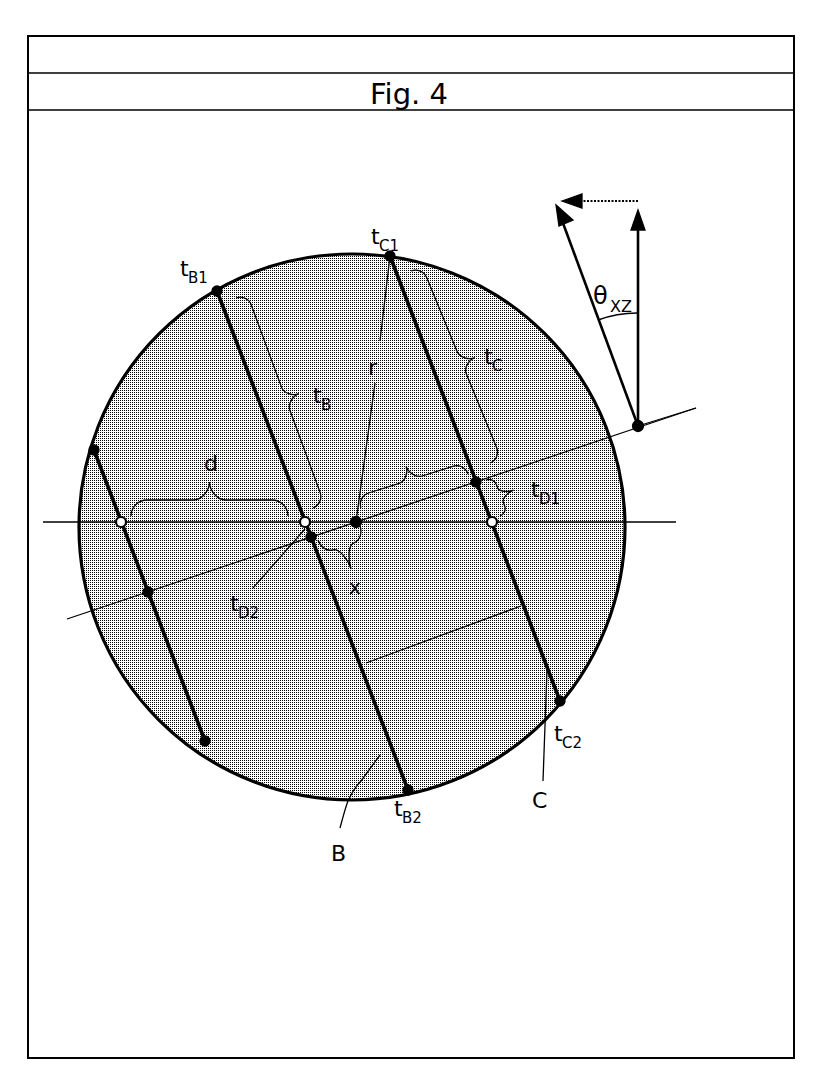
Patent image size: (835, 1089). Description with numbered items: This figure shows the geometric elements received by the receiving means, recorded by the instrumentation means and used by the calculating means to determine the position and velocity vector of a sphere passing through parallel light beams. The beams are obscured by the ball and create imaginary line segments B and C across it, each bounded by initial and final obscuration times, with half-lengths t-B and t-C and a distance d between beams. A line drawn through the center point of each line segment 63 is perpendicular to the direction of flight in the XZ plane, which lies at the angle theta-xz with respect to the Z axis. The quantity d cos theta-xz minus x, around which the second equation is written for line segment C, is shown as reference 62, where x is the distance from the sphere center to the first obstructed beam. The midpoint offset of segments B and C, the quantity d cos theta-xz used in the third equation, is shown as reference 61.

The midpoint offset of segments B and C 61 is at (425, 628).
The distance term around line segment C 62 is at (381, 513).
The line through the center points of the line segments 63 is at (658, 410).